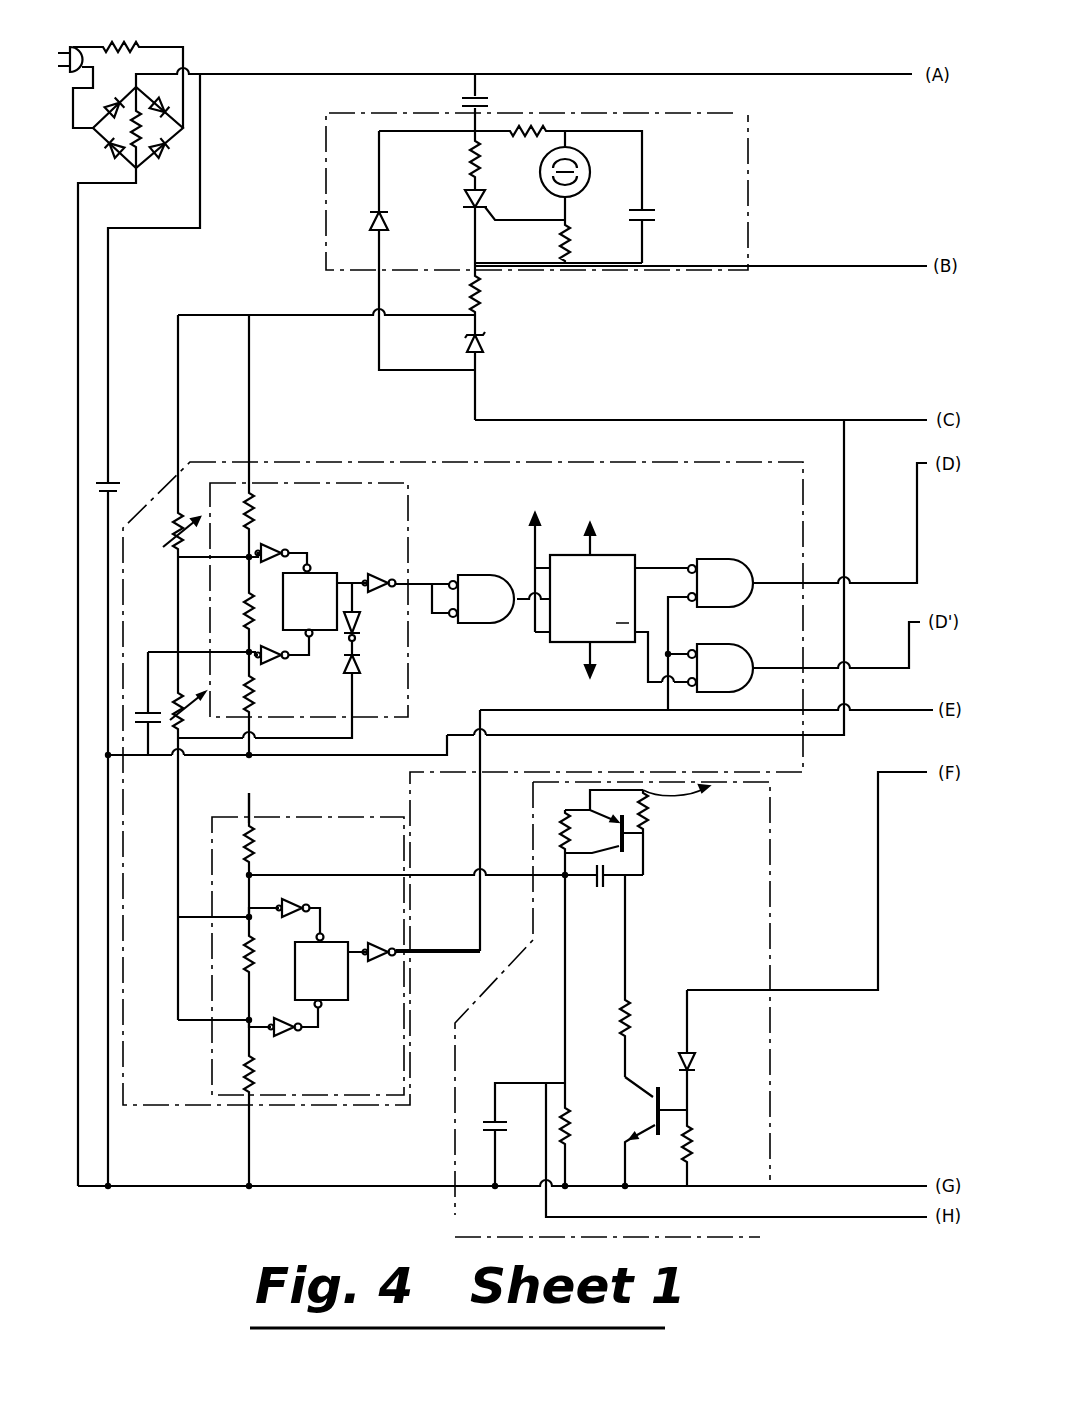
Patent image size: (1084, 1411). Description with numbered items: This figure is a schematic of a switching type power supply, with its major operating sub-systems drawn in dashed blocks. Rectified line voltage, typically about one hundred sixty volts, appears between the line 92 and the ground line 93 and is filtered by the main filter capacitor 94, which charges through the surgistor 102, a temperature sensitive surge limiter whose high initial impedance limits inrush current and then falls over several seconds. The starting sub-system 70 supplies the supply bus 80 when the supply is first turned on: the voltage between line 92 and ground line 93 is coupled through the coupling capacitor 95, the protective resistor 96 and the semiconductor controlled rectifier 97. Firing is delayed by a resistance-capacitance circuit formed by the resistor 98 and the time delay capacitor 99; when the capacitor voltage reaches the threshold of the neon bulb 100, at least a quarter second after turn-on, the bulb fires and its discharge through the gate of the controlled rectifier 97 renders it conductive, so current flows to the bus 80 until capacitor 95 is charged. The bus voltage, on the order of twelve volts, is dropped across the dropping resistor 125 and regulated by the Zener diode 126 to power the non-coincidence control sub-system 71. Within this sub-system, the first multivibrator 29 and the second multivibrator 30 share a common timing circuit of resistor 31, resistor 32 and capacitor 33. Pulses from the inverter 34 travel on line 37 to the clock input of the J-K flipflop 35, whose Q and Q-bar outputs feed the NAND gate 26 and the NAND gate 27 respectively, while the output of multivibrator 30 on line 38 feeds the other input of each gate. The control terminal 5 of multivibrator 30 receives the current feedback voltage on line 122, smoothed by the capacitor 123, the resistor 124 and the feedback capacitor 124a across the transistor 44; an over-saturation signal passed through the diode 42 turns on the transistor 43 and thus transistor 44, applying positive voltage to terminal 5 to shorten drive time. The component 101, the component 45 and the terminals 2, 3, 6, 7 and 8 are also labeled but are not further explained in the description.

The surgistor 102 is at (128, 42).
The line 92 is at (165, 72).
The ground line 93 is at (95, 184).
The main filter capacitor 94 is at (118, 486).
The starting sub-system 70 is at (388, 113).
The coupling capacitor 95 is at (490, 105).
The protective resistor 96 is at (468, 160).
The semiconductor controlled rectifier 97 is at (482, 204).
The resistor 98 is at (528, 134).
The time delay capacitor 99 is at (656, 217).
The threshold switching element 100 is at (580, 190).
The resistor 101 is at (563, 242).
The supply bus 80 is at (605, 267).
The dropping resistor 125 is at (483, 290).
The Zener diode 126 is at (490, 341).
The non-coincidence control sub-system 71 is at (356, 466).
The first multivibrator 29 is at (408, 523).
The resistor 31 is at (170, 540).
The resistor 32 is at (180, 731).
The capacitor 33 is at (145, 712).
The inverter 34 is at (494, 611).
The J-K flipflop 35 is at (562, 643).
The line 37 is at (530, 612).
The NAND gate 26 is at (736, 596).
The NAND gate 27 is at (736, 681).
The second multivibrator 30 is at (298, 817).
The line 38 is at (418, 952).
The transistor 44 is at (650, 816).
The feedback capacitor 124a is at (600, 888).
The resistor 45 is at (620, 1012).
The diode 42 is at (697, 1063).
The transistor 43 is at (655, 1110).
The capacitor 123 is at (497, 1118).
The resistor 124 is at (566, 1128).
The line 122 is at (812, 1217).
The node 2 is at (209, 829).
The node 3 is at (438, 772).
The control terminal 5 is at (423, 866).
The node 6 is at (228, 905).
The node 7 is at (273, 662).
The node 8 is at (258, 808).